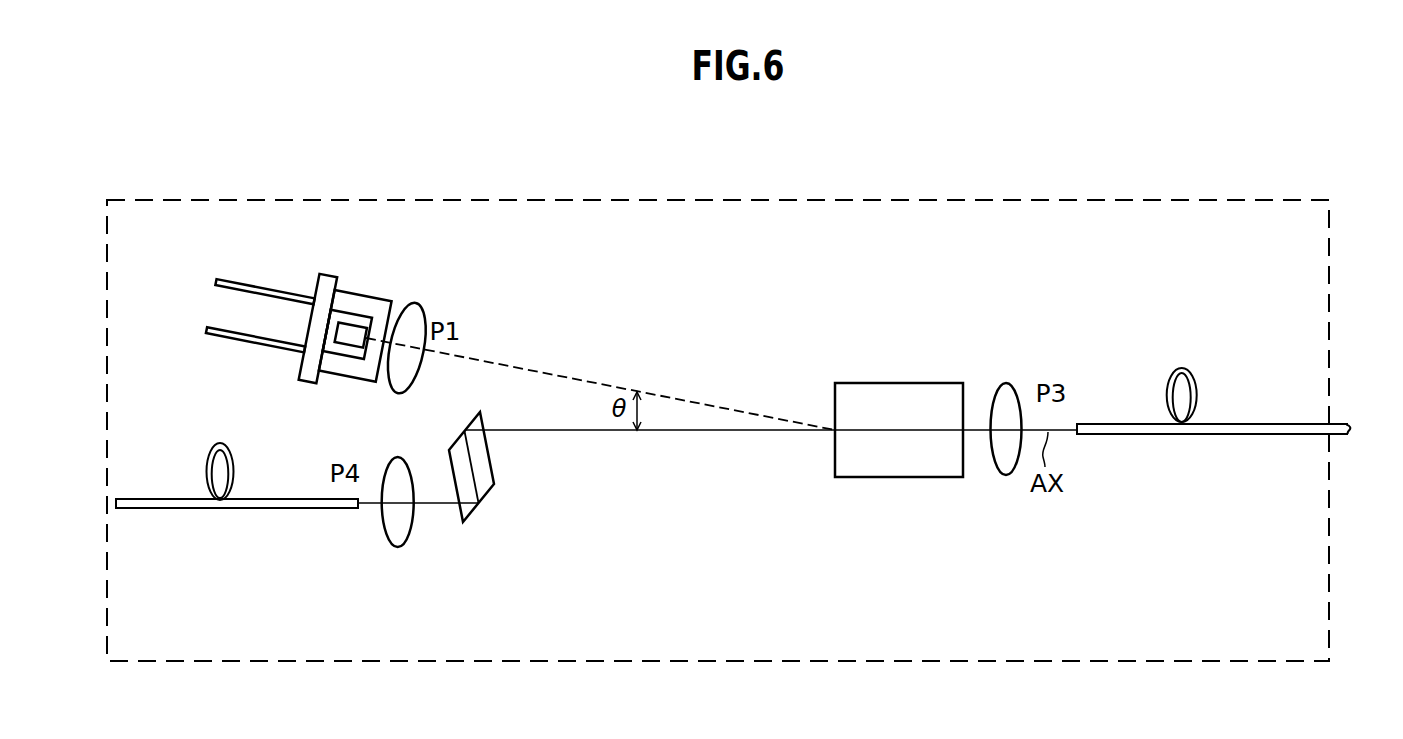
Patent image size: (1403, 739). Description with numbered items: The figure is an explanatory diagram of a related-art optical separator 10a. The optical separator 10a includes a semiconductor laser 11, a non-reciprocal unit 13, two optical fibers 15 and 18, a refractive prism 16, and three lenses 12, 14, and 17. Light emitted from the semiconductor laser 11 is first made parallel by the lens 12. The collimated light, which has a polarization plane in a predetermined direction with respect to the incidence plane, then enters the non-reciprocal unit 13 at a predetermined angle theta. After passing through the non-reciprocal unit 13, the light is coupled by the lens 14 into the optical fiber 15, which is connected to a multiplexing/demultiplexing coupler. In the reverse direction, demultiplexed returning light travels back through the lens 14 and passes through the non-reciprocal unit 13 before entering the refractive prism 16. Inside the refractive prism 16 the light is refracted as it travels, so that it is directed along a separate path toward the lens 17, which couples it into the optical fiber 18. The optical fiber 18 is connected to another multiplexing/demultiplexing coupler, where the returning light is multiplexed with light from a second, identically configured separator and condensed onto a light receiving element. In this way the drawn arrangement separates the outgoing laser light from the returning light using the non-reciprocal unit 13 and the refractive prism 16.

The optical separator 10a is at (1100, 199).
The semiconductor laser 11 is at (350, 292).
The lens 12 is at (417, 302).
The non-reciprocal unit 13 is at (897, 382).
The lens 14 is at (1002, 383).
The optical fiber 15 is at (1103, 421).
The refractive prism 16 is at (487, 497).
The lens 17 is at (398, 548).
The optical fiber 18 is at (285, 510).